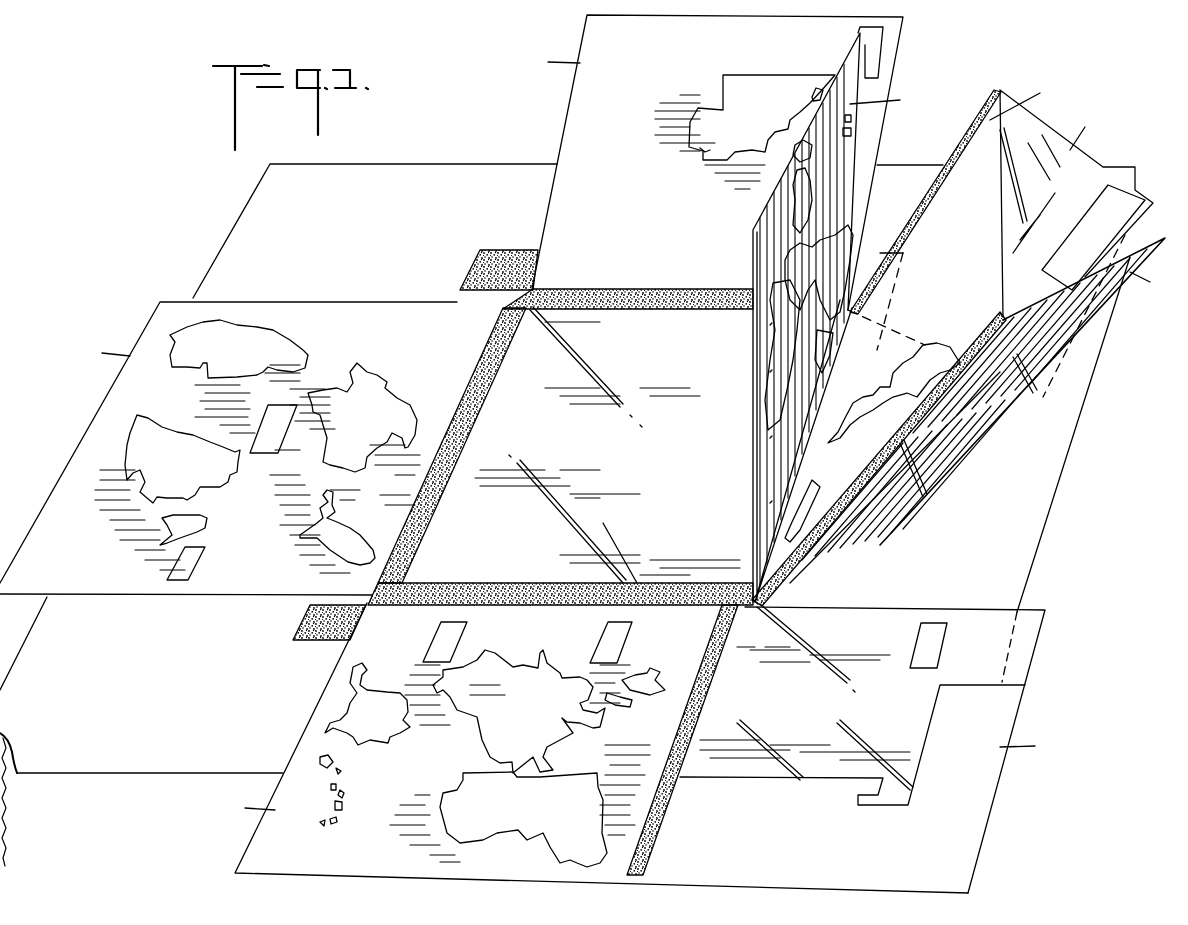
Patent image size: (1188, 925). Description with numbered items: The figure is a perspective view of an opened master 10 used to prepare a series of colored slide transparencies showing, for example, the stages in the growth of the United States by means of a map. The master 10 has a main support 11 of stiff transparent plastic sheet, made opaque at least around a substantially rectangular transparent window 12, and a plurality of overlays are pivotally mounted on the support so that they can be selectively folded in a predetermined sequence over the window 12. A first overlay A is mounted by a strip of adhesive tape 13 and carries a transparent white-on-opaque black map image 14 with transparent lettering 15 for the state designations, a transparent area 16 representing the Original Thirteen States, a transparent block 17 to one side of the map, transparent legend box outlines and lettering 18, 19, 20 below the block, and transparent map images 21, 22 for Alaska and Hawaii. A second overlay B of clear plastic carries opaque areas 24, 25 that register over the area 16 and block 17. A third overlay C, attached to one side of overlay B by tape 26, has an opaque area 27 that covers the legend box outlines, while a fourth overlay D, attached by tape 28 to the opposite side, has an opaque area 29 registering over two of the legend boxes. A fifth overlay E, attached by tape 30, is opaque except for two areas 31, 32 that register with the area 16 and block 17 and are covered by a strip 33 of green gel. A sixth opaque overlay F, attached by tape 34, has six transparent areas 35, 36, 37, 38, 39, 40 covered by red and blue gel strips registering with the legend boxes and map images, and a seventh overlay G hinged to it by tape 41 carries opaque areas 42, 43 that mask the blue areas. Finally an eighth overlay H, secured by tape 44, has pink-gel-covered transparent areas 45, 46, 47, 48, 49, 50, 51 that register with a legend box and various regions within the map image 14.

The master 10 is at (160, 152).
The main support 11 is at (250, 214).
The transparent window 12 is at (615, 450).
The strip of adhesive tape 13 is at (753, 568).
The map image 14 is at (830, 275).
The transparent lettering 15 is at (784, 258).
The area 16 is at (826, 312).
The block 17 is at (770, 503).
The legend box outline and lettering 18 is at (770, 438).
The legend box outline and lettering 19 is at (770, 372).
The legend box outline and lettering 20 is at (770, 325).
The map image 21 is at (800, 200).
The map image 22 is at (852, 138).
The opaque area 24 is at (945, 352).
The opaque area 25 is at (846, 440).
The tape 26 is at (997, 90).
The opaque area 27 is at (1138, 208).
The tape 28 is at (833, 520).
The opaque area 29 is at (977, 392).
The tape 30 is at (620, 312).
The transparent area 31 is at (700, 155).
The transparent area 32 is at (880, 47).
The strip of transparent colored gel 33 is at (767, 92).
The tape 34 is at (527, 585).
The block area 35 is at (630, 628).
The block area 36 is at (463, 627).
The map area 37 is at (605, 720).
The map area 38 is at (585, 815).
The map area 39 is at (385, 705).
The map area 40 is at (343, 771).
The tape 41 is at (700, 703).
The opaque area 42 is at (942, 623).
The opaque area 43 is at (935, 719).
The tape 44 is at (480, 420).
The transparent area 45 is at (195, 565).
The transparent area 46 is at (280, 340).
The transparent area 47 is at (378, 398).
The transparent area 48 is at (280, 437).
The transparent area 49 is at (348, 548).
The transparent area 50 is at (225, 478).
The transparent area 51 is at (207, 522).